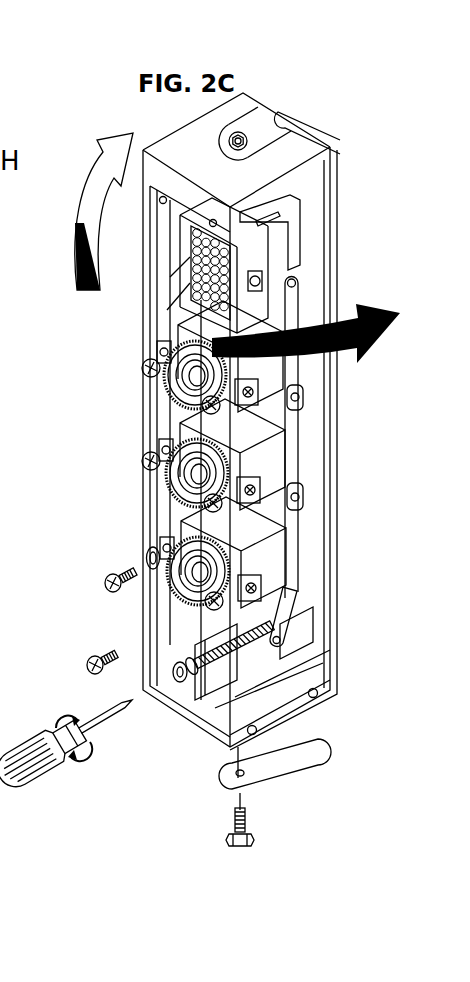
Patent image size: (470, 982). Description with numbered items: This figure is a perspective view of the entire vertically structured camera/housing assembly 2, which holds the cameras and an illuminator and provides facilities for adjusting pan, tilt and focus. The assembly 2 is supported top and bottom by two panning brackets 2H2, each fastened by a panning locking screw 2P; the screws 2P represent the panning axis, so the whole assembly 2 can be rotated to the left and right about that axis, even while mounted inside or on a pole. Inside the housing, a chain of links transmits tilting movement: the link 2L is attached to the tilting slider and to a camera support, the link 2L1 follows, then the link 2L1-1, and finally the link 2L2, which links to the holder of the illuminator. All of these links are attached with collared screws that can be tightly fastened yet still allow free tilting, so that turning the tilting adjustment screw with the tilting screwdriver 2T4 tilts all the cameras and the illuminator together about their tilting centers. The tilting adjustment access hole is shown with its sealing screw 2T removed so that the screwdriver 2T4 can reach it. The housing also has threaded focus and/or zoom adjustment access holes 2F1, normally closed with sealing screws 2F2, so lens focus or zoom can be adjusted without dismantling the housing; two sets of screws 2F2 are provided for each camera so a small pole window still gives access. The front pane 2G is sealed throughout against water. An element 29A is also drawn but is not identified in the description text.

The camera/housing assembly 2 is at (318, 108).
The panning bracket 2H2 is at (282, 128).
The bracket 29A is at (285, 228).
The link 2L2 is at (295, 300).
The front pane 2G is at (167, 270).
The sealing screw 2F2 is at (142, 375).
The link 2L1-1 is at (293, 432).
The link 2L1 is at (293, 522).
The focus and/or zoom adjustment access hole with thread 2F1 is at (148, 553).
The link 2L is at (288, 610).
The sealing screw 2T is at (88, 670).
The tilting screwdriver 2T4 is at (118, 717).
The panning locking screw 2P is at (224, 832).